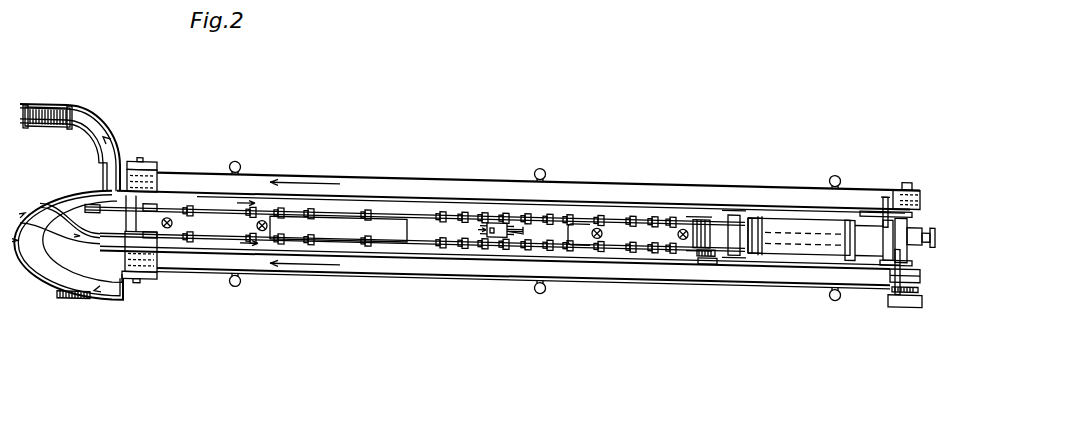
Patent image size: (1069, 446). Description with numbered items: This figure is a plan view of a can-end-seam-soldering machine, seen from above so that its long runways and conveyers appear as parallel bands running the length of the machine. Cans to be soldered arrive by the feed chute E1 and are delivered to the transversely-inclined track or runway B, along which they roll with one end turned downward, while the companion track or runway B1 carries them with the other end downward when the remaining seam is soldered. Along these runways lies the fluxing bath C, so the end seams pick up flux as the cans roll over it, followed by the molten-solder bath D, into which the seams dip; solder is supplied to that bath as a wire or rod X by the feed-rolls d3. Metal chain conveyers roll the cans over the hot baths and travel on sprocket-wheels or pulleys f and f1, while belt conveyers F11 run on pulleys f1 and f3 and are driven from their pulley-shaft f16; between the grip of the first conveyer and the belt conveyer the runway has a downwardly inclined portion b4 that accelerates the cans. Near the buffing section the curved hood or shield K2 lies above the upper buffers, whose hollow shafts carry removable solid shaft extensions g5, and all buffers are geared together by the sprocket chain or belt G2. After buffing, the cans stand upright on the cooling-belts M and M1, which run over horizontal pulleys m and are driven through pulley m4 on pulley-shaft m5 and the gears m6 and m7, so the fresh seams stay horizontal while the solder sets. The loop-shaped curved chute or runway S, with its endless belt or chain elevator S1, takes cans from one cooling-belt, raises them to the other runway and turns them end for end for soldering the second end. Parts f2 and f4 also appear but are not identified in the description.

The can feed chute E1 is at (17, 227).
The horizontal pulley m is at (160, 171).
The fluxing bath C is at (285, 226).
The sprocket-wheel or pulley f1 is at (393, 203).
The cooling-belt M1 is at (518, 190).
The cooling-belt M is at (500, 269).
The solder wire or rod X is at (495, 218).
The molten-solder bath D is at (520, 214).
The feed-rolls d3 is at (495, 231).
The upper rod f4 is at (576, 206).
The transversely-inclined track or runway B1 is at (638, 201).
The transversely-inclined track or runway B is at (612, 240).
The sprocket-wheel or pulley f is at (158, 241).
The plate f2 is at (728, 252).
The longitudinally downwardly inclined portion b4 is at (707, 250).
The endless conveyer F11 is at (772, 202).
The curved hood or shield K2 is at (815, 244).
The solid shaft extension g5 is at (880, 205).
The sprocket chain or belt G2 is at (900, 239).
The pulley f3 is at (918, 185).
The pulley-shaft f16 is at (925, 203).
The pulley m4 is at (922, 263).
The pulley-shaft m5 is at (900, 283).
The gear m6 is at (935, 265).
The gear m7 is at (898, 274).
The curved chute or runway S is at (30, 281).
The endless belt or chain elevator S1 is at (75, 302).